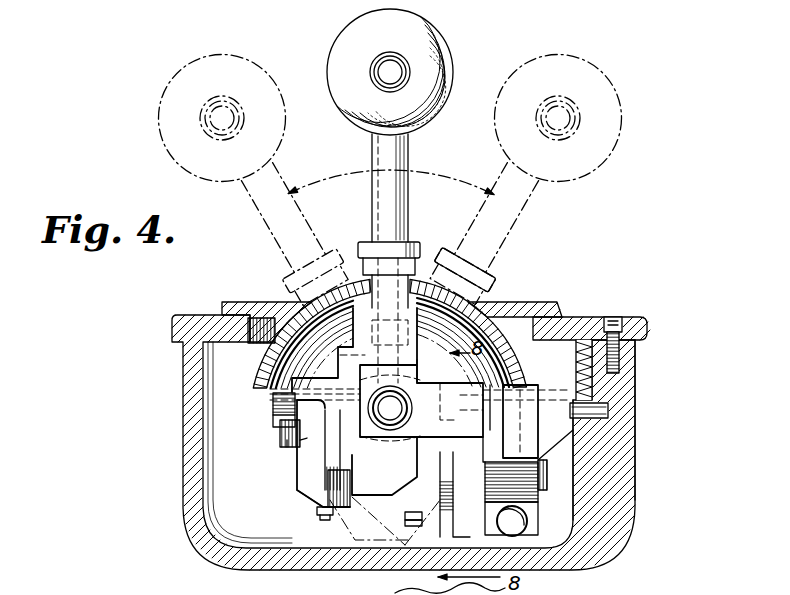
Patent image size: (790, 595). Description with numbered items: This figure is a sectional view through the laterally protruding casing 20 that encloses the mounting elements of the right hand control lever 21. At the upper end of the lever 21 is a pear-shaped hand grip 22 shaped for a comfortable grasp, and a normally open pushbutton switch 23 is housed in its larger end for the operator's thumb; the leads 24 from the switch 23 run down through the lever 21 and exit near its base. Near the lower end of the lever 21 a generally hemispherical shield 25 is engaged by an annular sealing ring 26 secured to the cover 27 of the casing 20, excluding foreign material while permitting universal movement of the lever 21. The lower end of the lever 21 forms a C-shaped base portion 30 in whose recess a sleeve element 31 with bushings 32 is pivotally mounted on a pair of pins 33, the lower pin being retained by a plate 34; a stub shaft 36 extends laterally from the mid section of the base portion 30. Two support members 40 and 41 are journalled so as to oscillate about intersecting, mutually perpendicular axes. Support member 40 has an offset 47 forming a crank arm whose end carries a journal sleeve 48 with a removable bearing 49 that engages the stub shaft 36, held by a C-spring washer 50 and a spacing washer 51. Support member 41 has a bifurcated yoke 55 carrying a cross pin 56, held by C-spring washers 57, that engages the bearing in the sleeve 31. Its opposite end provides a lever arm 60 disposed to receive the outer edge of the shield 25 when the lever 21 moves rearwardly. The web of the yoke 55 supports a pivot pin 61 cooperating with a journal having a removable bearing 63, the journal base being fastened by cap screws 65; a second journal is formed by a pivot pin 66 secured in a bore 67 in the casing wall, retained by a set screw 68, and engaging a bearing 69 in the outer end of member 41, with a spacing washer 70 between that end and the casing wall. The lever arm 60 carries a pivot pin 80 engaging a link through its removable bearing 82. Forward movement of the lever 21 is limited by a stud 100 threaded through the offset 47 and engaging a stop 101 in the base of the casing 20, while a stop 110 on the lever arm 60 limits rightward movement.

The casing 20 is at (183, 378).
The hand control lever 21 is at (410, 153).
The hand grip 22 is at (428, 24).
The pushbutton switch 23 is at (372, 56).
The leads 24 is at (432, 298).
The hemispherical shield 25 is at (494, 298).
The sealing ring 26 is at (528, 300).
The cover 27 is at (586, 317).
The base portion 30 is at (414, 354).
The sleeve element 31 is at (415, 373).
The bushings 32 is at (424, 381).
The pins 33 is at (414, 336).
The plate 34 is at (360, 503).
The stub shaft 36 is at (273, 414).
The support member 40 is at (293, 469).
The support member 41 is at (512, 396).
The offset 47 is at (297, 486).
The journal sleeve 48 is at (272, 405).
The bearing 49 is at (307, 438).
The C-spring washer 50 is at (278, 428).
The spacing washer 51 is at (287, 440).
The yoke 55 is at (458, 382).
The cross pin 56 is at (412, 398).
The C-spring washers 57 is at (394, 407).
The lever arm 60 is at (528, 513).
The pivot pin 61 is at (504, 432).
The bearing 63 is at (456, 392).
The cap screws 65 is at (413, 511).
The pivot pin 66 is at (636, 410).
The bore 67 is at (628, 422).
The set screw 68 is at (637, 387).
The bearing 69 is at (540, 392).
The spacing washer 70 is at (570, 432).
The pivot pin 80 is at (539, 500).
The bearing 82 is at (482, 458).
The stud 100 is at (318, 514).
The stop 101 is at (362, 553).
The stop 110 is at (514, 523).